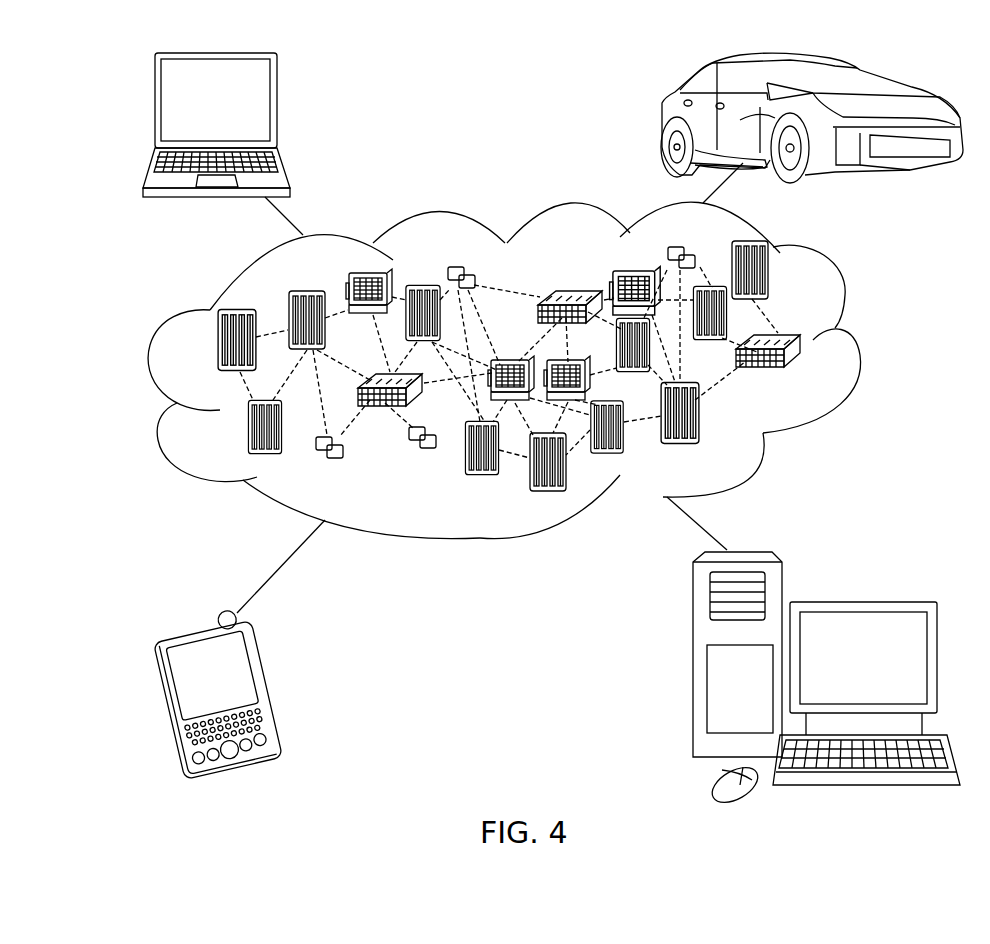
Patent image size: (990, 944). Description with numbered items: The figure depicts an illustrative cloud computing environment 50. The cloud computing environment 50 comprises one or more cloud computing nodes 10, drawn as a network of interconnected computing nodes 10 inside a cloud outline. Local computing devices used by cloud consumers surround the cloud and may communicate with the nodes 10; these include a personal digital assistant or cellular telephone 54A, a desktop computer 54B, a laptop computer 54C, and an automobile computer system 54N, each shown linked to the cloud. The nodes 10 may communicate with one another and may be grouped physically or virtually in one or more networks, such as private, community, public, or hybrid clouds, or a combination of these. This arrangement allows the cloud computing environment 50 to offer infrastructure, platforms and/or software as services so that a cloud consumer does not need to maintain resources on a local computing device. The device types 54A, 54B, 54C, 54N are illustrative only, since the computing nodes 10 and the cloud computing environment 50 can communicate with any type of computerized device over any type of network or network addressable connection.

The cloud computing nodes 10 is at (555, 366).
The cloud computing environment 50 is at (857, 345).
The personal digital assistant or cellular telephone 54A is at (273, 688).
The desktop computer 54B is at (860, 602).
The laptop computer 54C is at (280, 107).
The automobile computer system 54N is at (662, 122).